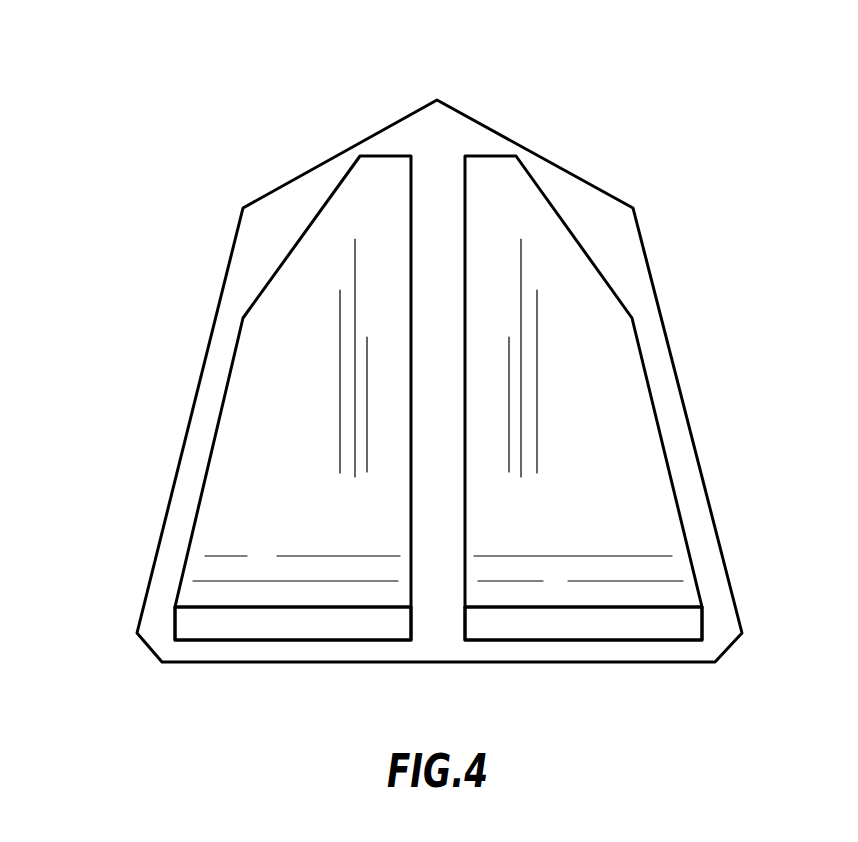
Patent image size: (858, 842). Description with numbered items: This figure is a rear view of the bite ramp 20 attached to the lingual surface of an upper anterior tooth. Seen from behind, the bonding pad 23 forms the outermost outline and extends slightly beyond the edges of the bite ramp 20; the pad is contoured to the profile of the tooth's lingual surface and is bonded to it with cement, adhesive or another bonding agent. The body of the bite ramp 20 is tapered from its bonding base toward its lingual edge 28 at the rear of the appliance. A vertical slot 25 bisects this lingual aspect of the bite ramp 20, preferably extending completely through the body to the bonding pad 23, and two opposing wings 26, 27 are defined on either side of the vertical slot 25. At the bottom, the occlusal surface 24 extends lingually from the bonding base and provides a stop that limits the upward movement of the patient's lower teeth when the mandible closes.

The bite ramp 20 is at (430, 387).
The bonding pad 23 is at (573, 202).
The occlusal surface 24 is at (397, 640).
The vertical slot 25 is at (437, 175).
The wing 26 is at (303, 513).
The wing 27 is at (612, 513).
The lingual edge 28 is at (195, 623).